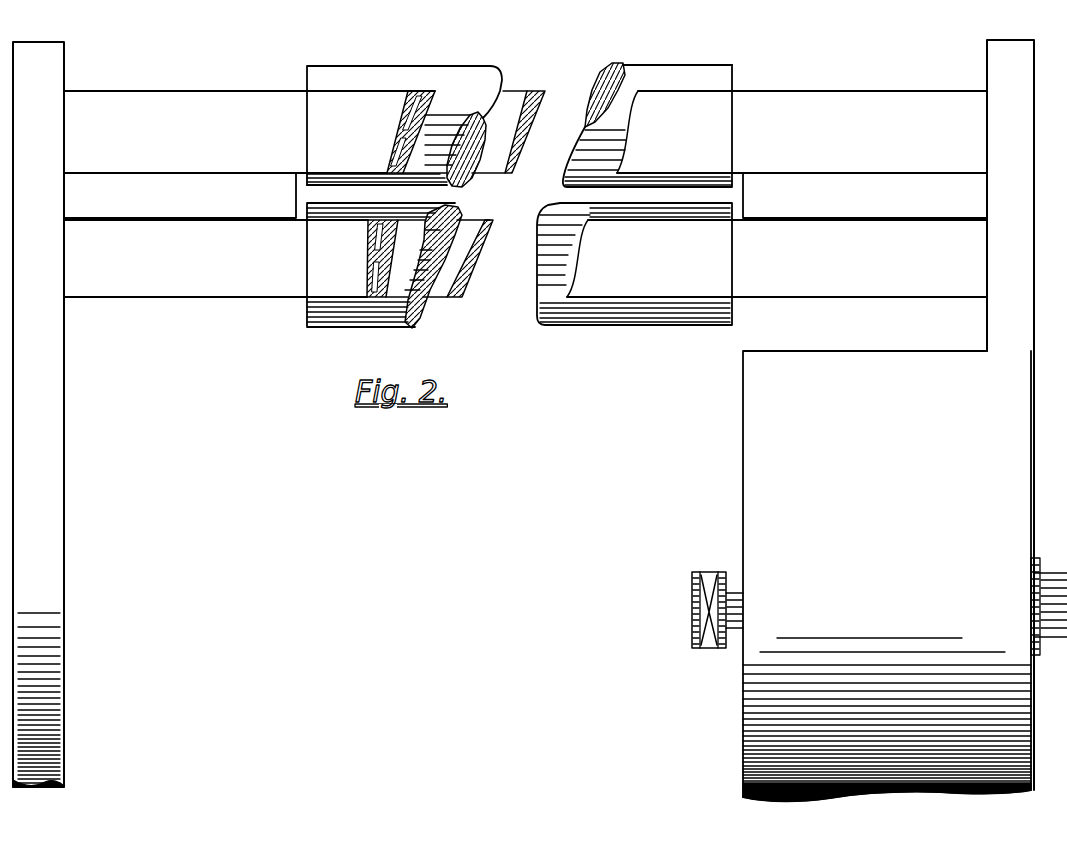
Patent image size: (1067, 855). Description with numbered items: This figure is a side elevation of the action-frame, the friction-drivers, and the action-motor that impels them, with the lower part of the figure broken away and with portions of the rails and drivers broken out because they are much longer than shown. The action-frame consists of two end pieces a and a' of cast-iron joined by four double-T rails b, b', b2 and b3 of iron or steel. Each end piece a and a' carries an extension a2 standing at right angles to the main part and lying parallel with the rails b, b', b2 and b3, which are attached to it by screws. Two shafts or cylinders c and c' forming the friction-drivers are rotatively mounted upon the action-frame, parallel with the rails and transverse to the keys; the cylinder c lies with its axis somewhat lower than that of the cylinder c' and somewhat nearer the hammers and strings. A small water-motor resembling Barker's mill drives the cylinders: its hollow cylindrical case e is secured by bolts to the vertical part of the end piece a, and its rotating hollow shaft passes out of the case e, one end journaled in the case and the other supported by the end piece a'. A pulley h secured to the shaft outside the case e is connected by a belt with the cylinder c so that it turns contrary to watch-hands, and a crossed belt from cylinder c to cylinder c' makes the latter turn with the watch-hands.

The end piece a is at (38, 414).
The end piece a' is at (1010, 415).
The extension a2 is at (525, 195).
The double-T rail b is at (525, 132).
The double-T rail b' is at (466, 139).
The double-T rail b2 is at (525, 258).
The double-T rail b3 is at (450, 252).
The cylinder c is at (519, 283).
The cylinder c' is at (519, 107).
The hollow cylindrical case e is at (887, 576).
The pulley h is at (700, 604).